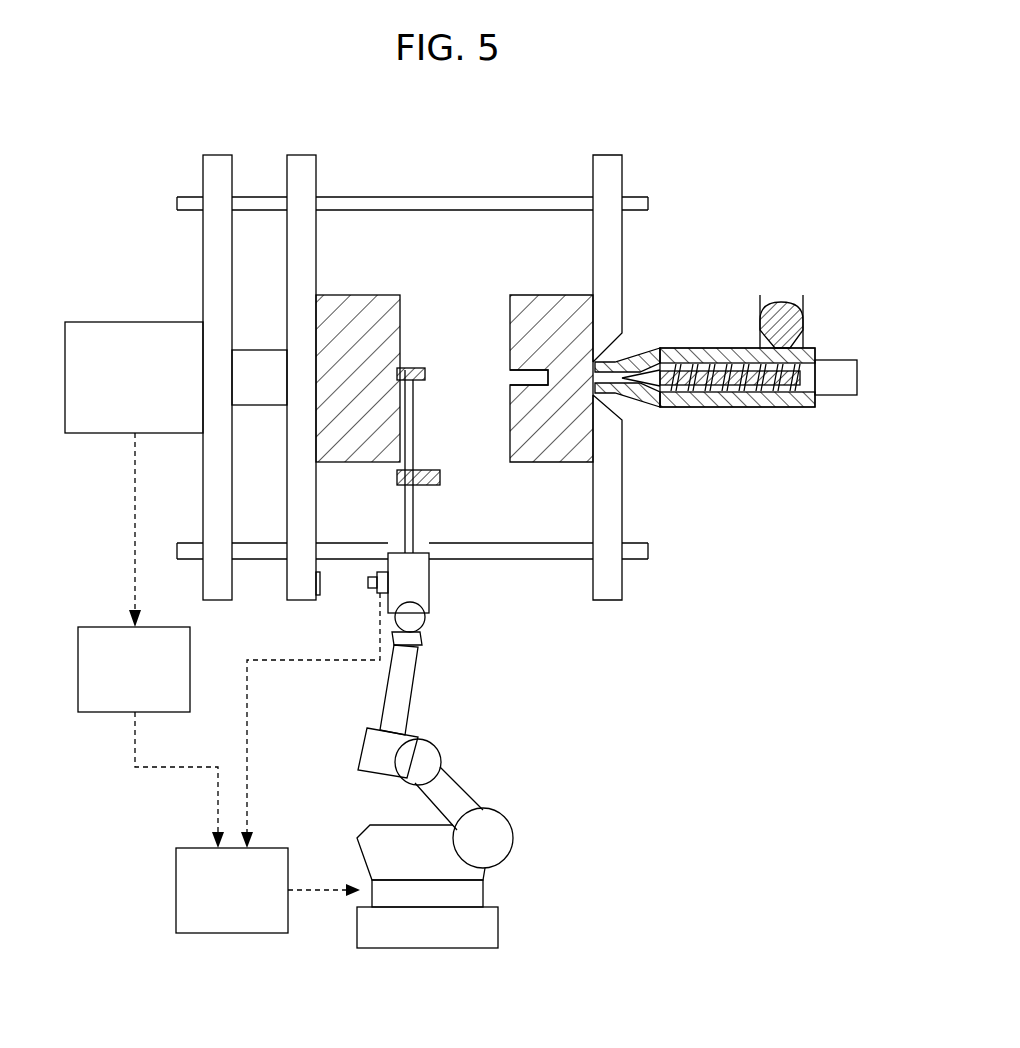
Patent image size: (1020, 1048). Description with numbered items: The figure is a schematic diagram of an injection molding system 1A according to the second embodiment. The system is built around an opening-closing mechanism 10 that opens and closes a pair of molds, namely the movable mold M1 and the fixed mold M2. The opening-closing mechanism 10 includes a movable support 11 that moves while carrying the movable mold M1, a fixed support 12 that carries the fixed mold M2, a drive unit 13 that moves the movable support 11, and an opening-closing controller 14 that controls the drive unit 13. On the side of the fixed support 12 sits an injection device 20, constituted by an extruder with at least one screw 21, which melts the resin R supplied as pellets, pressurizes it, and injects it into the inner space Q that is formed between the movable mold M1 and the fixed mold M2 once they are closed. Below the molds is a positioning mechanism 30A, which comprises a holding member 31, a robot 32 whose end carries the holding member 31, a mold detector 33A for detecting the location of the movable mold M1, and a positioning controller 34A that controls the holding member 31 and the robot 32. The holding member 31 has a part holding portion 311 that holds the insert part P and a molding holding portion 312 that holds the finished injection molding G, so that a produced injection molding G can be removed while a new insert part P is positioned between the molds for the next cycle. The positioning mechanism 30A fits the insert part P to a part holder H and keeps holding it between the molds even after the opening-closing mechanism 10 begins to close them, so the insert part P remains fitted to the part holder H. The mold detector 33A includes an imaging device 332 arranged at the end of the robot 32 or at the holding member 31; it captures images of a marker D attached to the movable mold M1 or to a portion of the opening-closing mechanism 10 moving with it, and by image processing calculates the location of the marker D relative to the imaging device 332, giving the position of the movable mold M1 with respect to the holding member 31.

The injection molding system 1A is at (792, 178).
The opening-closing mechanism 10 is at (478, 190).
The movable support 11 is at (316, 183).
The fixed support 12 is at (593, 183).
The drive unit 13 is at (134, 322).
The opening-closing controller 14 is at (93, 627).
The injection device 20 is at (701, 336).
The screw 21 is at (733, 395).
The positioning mechanism 30A is at (392, 750).
The holding member 31 is at (420, 516).
The part holding portion 311 is at (424, 374).
The molding holding portion 312 is at (410, 486).
The robot 32 is at (455, 782).
The mold detector 33A is at (344, 602).
The imaging device 332 is at (373, 593).
The positioning controller 34A is at (176, 893).
The movable mold M1 is at (356, 295).
The fixed mold M2 is at (550, 295).
The part holder H is at (405, 370).
The inner space Q is at (537, 377).
The insert part P is at (424, 380).
The injection molding G is at (394, 474).
The resin R is at (784, 303).
The marker D is at (322, 590).